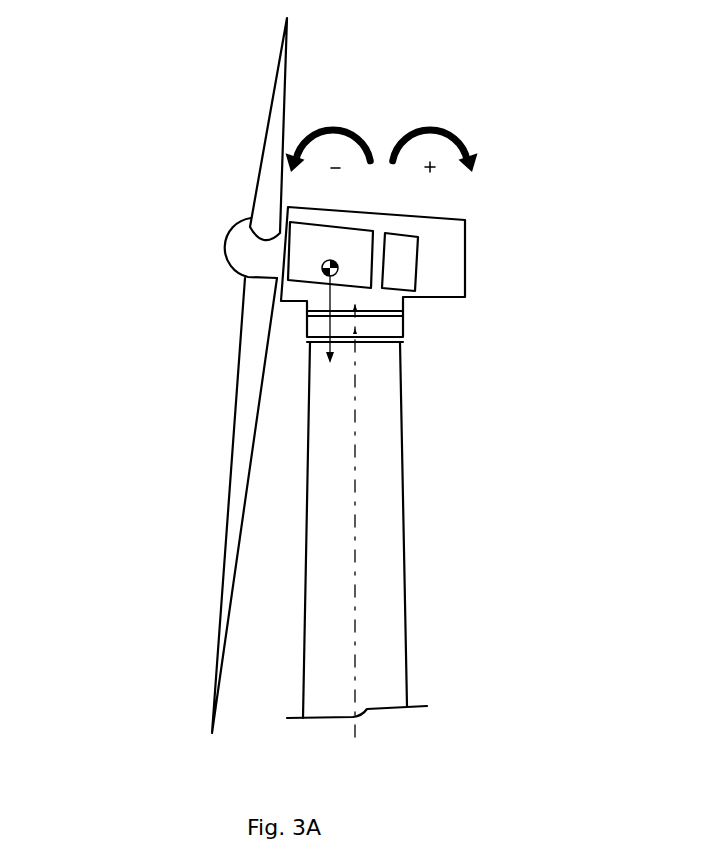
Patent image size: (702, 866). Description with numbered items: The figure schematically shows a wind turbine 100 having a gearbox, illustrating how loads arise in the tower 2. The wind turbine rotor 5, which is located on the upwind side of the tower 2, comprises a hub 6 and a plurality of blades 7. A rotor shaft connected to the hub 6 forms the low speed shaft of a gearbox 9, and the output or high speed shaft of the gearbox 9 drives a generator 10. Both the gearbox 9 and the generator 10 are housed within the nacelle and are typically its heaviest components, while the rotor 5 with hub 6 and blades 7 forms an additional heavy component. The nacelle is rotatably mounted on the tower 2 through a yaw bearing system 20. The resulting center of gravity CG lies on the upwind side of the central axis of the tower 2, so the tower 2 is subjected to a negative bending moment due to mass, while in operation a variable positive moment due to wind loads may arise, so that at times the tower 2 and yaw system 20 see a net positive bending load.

The wind turbine 100 is at (175, 132).
The blades 7 is at (272, 126).
The hub 6 is at (233, 250).
The rotor 5 is at (200, 380).
The generator 10 is at (358, 250).
The gearbox 9 is at (403, 270).
The yaw bearing system 20 is at (428, 347).
The tower 2 is at (387, 543).